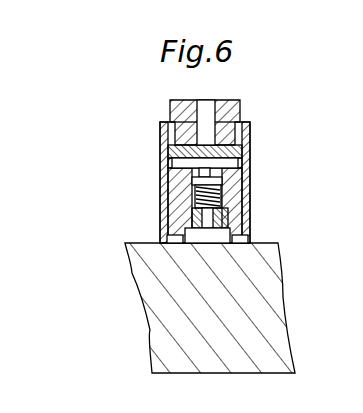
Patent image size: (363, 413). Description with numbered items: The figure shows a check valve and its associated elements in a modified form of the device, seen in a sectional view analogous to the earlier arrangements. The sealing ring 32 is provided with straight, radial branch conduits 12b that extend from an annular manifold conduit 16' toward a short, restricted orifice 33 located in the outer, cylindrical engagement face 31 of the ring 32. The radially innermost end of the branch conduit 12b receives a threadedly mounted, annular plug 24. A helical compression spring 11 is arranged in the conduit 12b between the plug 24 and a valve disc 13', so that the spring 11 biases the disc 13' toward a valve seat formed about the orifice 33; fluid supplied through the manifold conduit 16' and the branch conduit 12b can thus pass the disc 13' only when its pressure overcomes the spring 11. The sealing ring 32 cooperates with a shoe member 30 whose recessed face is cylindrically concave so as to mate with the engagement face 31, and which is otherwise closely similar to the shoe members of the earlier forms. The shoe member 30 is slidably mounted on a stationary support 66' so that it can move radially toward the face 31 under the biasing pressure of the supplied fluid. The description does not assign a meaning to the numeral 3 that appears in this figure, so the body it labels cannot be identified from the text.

The base 3 is at (172, 292).
The helical compression spring 11 is at (224, 226).
The branch conduit 12b is at (252, 238).
The valve disc 13' is at (158, 191).
The annular manifold conduit 16' is at (140, 250).
The annular plug 24 is at (186, 235).
The shoe member 30 is at (252, 140).
The engagement face 31 is at (223, 160).
The sealing ring 32 is at (225, 188).
The restricted orifice 33 is at (165, 176).
The stationary support 66' is at (242, 122).